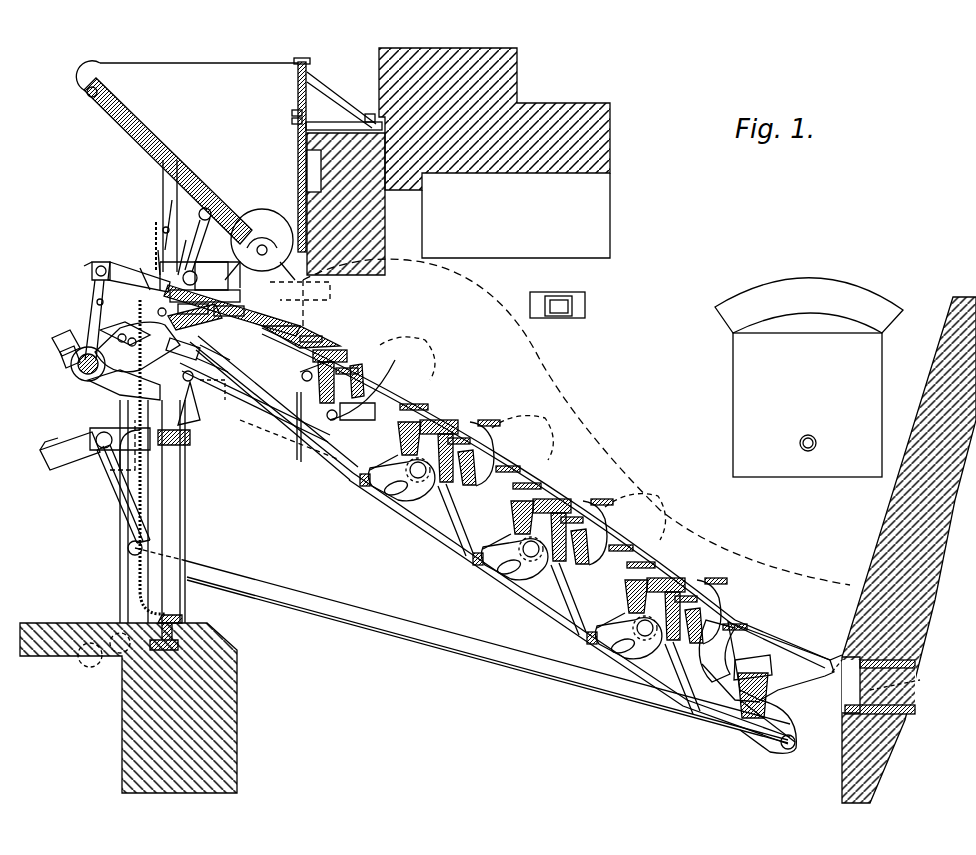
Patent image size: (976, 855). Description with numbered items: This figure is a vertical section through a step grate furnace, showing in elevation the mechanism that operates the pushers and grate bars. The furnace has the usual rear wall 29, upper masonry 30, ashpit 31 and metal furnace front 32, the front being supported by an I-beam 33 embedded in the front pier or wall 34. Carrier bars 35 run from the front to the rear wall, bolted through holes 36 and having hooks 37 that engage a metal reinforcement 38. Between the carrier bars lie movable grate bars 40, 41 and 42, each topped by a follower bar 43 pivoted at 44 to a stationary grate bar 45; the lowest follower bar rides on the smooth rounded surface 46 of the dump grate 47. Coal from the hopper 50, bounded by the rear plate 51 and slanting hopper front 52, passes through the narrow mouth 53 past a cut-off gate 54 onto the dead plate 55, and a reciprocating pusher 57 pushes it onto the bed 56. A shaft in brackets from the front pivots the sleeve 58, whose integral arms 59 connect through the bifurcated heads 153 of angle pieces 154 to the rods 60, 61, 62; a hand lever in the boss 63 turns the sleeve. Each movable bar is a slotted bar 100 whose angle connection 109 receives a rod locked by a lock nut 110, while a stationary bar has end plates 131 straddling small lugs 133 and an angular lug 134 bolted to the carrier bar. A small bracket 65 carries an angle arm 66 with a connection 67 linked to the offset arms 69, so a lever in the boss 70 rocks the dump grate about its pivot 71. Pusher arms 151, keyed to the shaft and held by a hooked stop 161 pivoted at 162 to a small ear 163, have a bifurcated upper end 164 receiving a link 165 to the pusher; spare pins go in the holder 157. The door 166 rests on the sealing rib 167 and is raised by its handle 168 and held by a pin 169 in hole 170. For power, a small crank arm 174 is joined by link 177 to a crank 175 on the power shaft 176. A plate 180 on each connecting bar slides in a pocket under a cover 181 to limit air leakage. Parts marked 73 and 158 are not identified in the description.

The rear wall 29 is at (885, 512).
The upper masonry 30 is at (458, 161).
The ashpit 31 is at (426, 706).
The metal furnace front 32 is at (170, 445).
The I-beam 33 is at (185, 628).
The front pier or wall 34 is at (232, 680).
The carrier bars 35 is at (300, 445).
The holes 36 is at (240, 380).
The hooks 37 is at (906, 681).
The metal reinforcement 38 is at (842, 720).
The movable grate bar 40 is at (408, 398).
The movable grate bar 41 is at (518, 476).
The movable grate bar 42 is at (630, 558).
The follower bar 43 is at (380, 378).
The pivot 44 is at (565, 580).
The stationary grate bars 45 is at (350, 352).
The smooth rounded surface 46 is at (705, 650).
The dump grate 47 is at (755, 645).
The hopper 50 is at (187, 166).
The rear plate 51 is at (326, 155).
The slanting hopper front 52 is at (152, 128).
The narrow mouth 53 is at (260, 244).
The cut-off gate 54 is at (251, 243).
The dead plate 55 is at (305, 330).
The bed 56 is at (362, 278).
The reciprocating pusher 57 is at (262, 302).
The sleeve 58 is at (86, 384).
The arms 59 is at (98, 330).
The rod 60 is at (262, 410).
The rod 61 is at (413, 512).
The rod 62 is at (545, 598).
The boss 63 is at (62, 340).
The small bracket 65 is at (112, 420).
The angle arm 66 is at (100, 478).
The connection 67 is at (128, 552).
The offset arms 69 is at (775, 750).
The boss 70 is at (60, 458).
The pivot 71 is at (775, 648).
The member 73 is at (462, 520).
The slotted bar 100 is at (405, 438).
The angle connection 109 is at (392, 500).
The lock nut 110 is at (352, 480).
The end plates 131 is at (446, 490).
The small lugs 133 is at (552, 560).
The angular lug 134 is at (308, 378).
The pusher arms 151 is at (96, 292).
The bifurcated heads 153 is at (140, 330).
The angle pieces 154 is at (190, 354).
The holder 157 is at (158, 310).
The bar 158 is at (200, 326).
The hooked stop 161 is at (98, 262).
The pivot 162 is at (132, 279).
The small ear 163 is at (158, 250).
The bifurcated upper end 164 is at (92, 272).
The link 165 is at (110, 268).
The door 166 is at (200, 212).
The sealing rib 167 is at (186, 240).
The handle 168 is at (154, 224).
The pin 169 is at (160, 214).
The hole 170 is at (170, 200).
The small crank arm 174 is at (100, 310).
The crank 175 is at (108, 630).
The power shaft 176 is at (88, 662).
The link 177 is at (122, 590).
The plate 180 is at (200, 403).
The cover 181 is at (182, 376).